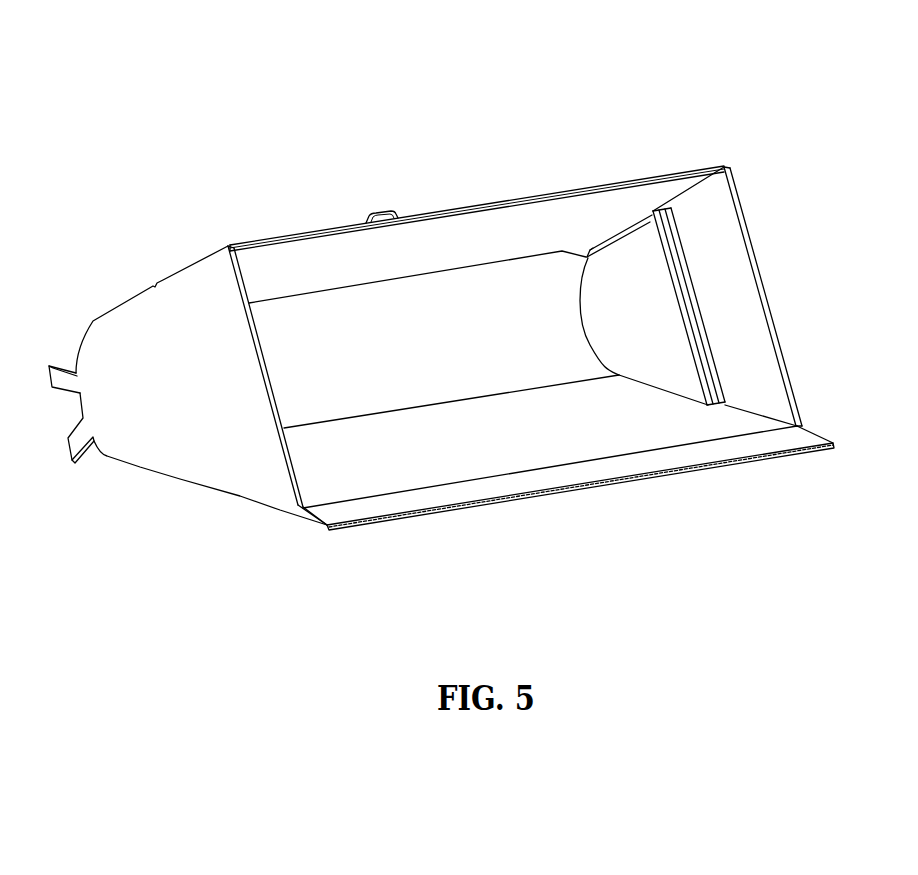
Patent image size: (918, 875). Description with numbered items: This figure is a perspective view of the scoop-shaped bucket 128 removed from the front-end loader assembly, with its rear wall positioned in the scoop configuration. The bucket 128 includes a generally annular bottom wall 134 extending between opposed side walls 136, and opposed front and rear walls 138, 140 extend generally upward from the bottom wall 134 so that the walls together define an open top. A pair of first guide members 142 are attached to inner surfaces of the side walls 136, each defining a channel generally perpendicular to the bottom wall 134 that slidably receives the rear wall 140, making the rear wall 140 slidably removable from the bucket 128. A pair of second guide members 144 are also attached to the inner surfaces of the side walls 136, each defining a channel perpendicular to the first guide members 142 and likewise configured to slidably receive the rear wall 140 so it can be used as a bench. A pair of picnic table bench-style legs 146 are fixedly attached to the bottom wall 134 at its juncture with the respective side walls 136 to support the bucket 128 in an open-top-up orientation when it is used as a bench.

The scoop-shaped bucket 128 is at (306, 98).
The bottom wall 134 is at (368, 358).
The side walls 136 is at (731, 199).
The front wall 138 is at (578, 465).
The rear wall 140 is at (547, 205).
The first guide members 142 is at (610, 247).
The second guide members 144 is at (693, 307).
The picnic table bench-style legs 146 is at (77, 468).